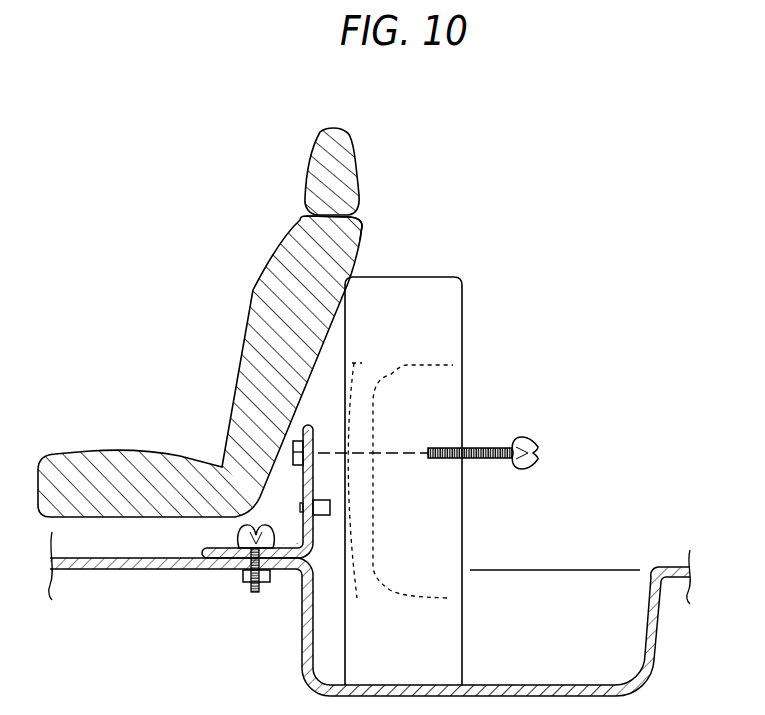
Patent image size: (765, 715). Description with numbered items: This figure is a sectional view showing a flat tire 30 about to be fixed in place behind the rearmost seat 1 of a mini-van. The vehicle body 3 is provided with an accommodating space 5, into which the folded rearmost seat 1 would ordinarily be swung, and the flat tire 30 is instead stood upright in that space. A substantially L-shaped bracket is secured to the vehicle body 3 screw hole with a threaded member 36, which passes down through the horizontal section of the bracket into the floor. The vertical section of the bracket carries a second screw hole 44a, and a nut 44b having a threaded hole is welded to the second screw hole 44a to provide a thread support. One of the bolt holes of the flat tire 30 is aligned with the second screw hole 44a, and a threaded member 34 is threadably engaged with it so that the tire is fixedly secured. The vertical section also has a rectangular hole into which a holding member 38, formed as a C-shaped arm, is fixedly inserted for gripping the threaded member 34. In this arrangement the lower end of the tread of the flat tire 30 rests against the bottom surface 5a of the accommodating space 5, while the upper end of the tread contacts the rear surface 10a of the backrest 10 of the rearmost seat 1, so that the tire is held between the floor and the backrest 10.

The rearmost seat 1 is at (393, 155).
The backrest 10 is at (257, 298).
The rear surface of the backrest 10a is at (357, 248).
The flat tire 30 is at (448, 323).
The threaded member 34 is at (538, 453).
The threaded member 36 is at (257, 590).
The holding member 38 is at (330, 507).
The second screw hole 44a is at (308, 450).
The nut 44b is at (297, 468).
The vehicle body 3 is at (133, 565).
The accommodating space 5 is at (496, 623).
The bottom surface of the accommodating space 5a is at (522, 685).